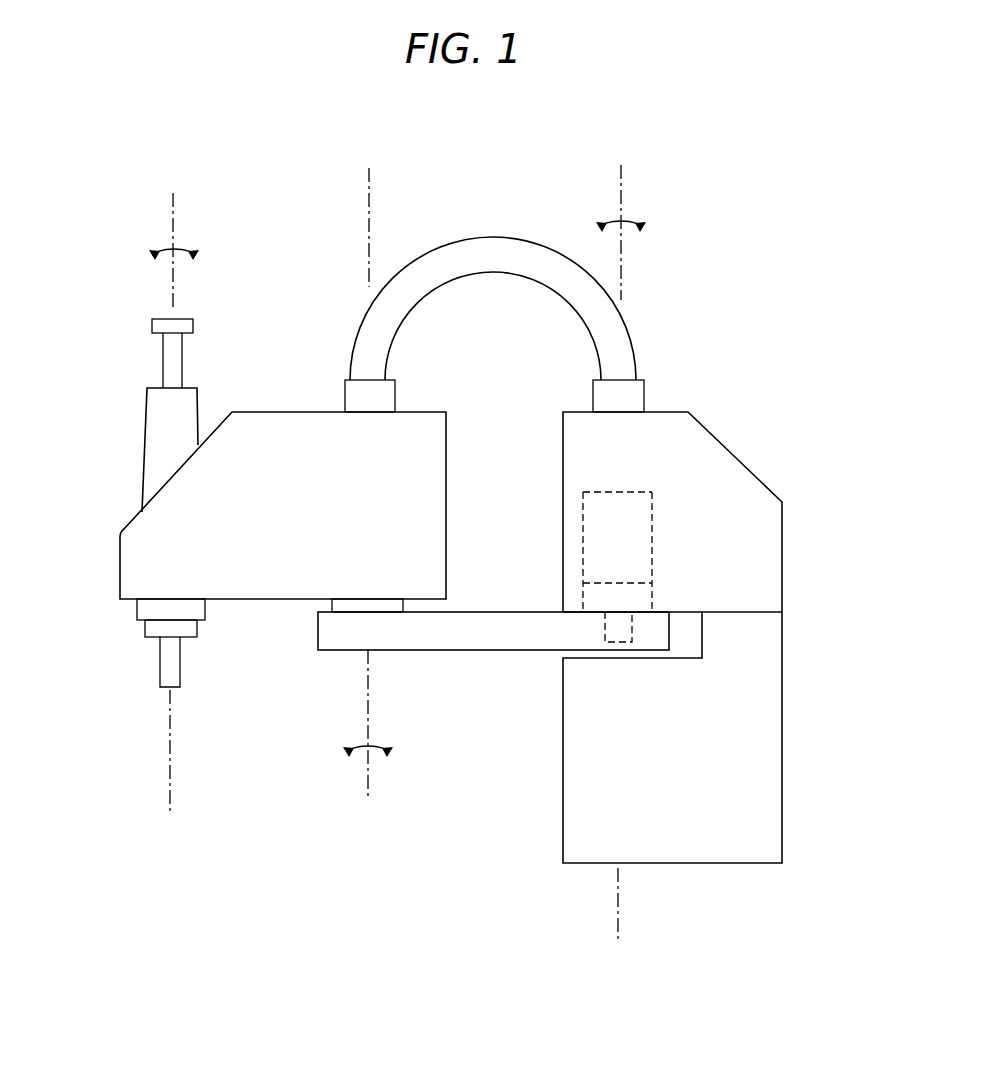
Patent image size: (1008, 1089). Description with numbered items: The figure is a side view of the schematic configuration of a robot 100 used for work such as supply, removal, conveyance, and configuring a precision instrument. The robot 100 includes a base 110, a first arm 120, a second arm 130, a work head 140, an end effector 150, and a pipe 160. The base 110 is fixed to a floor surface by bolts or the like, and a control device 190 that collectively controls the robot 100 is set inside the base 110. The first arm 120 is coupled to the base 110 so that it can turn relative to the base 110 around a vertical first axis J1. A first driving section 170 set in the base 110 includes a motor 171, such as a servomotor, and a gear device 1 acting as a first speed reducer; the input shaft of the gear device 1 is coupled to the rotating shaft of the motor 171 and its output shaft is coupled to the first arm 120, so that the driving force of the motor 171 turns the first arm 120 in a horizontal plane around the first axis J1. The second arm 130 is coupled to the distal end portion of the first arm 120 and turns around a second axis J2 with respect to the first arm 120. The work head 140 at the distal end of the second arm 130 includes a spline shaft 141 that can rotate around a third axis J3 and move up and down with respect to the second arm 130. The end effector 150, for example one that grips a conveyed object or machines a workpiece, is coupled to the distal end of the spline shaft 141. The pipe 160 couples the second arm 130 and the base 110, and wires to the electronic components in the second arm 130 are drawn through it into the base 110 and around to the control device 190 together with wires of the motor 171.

The robot 100 is at (681, 206).
The base 110 is at (786, 730).
The first arm 120 is at (434, 653).
The second arm 130 is at (450, 440).
The work head 140 is at (145, 430).
The spline shaft 141 is at (165, 355).
The end effector 150 is at (160, 665).
The pipe 160 is at (470, 250).
The first driving section 170 is at (582, 495).
The motor 171 is at (583, 540).
The gear device 1 is at (583, 602).
The control device 190 is at (680, 788).
The first axis J1 is at (620, 185).
The second axis J2 is at (370, 780).
The third axis J3 is at (176, 214).